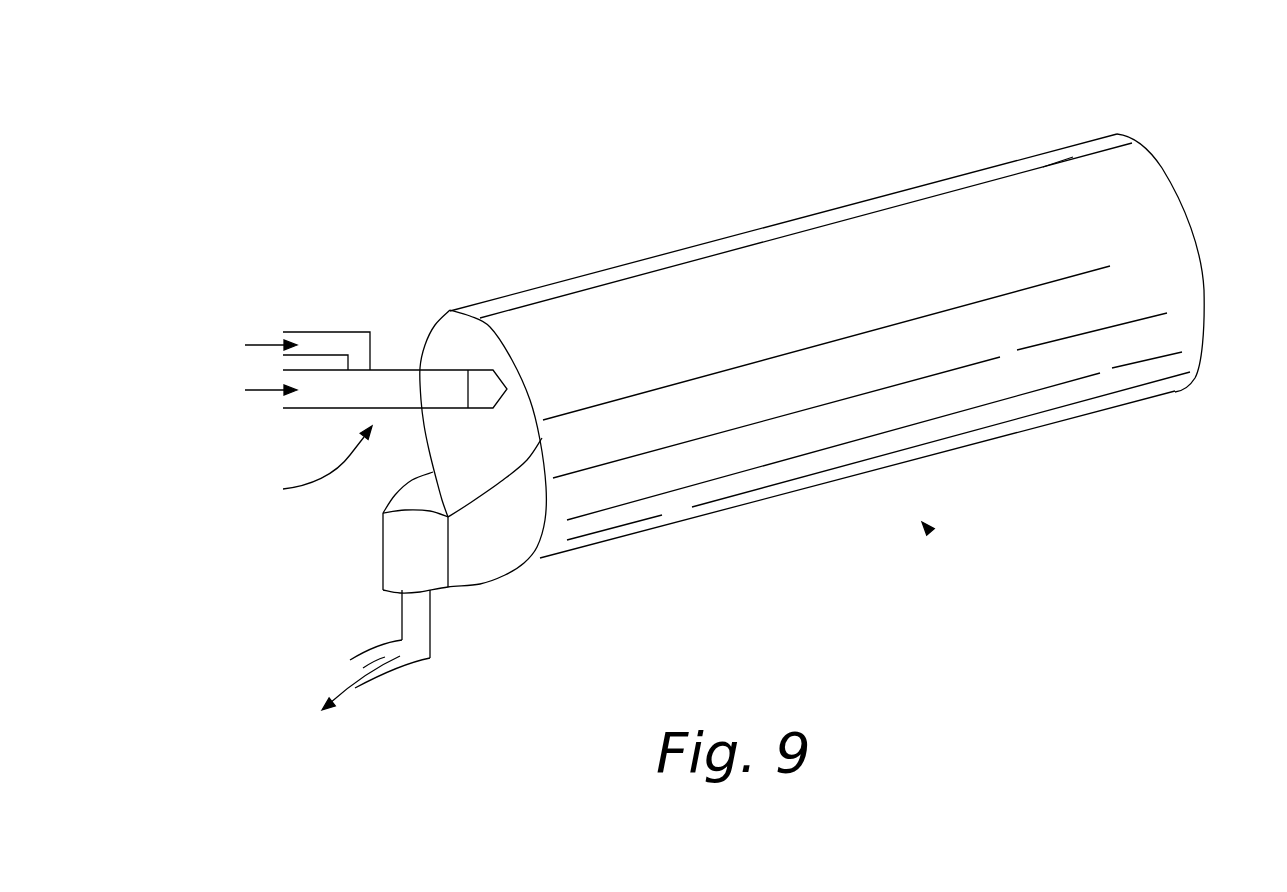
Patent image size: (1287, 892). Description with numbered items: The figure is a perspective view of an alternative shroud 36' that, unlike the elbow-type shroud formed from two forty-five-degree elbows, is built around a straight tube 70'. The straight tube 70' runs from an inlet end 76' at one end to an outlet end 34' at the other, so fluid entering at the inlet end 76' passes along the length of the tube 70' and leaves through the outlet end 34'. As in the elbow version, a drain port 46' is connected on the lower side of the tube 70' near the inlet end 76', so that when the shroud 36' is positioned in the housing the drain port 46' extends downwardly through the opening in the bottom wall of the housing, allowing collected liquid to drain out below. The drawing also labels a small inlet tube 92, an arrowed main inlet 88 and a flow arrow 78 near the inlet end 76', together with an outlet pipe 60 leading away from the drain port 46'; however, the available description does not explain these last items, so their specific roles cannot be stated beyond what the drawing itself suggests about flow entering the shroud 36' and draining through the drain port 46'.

The outlet end 34' is at (844, 317).
The straight tube 70' is at (806, 229).
The inlet end 76' is at (464, 394).
The inlet tube 92 is at (333, 347).
The main inlet tube 88 is at (260, 393).
The flow direction arrow 78 is at (313, 465).
The drain port 46' is at (347, 550).
The outlet pipe 60 is at (430, 648).
The shroud 36' is at (969, 585).